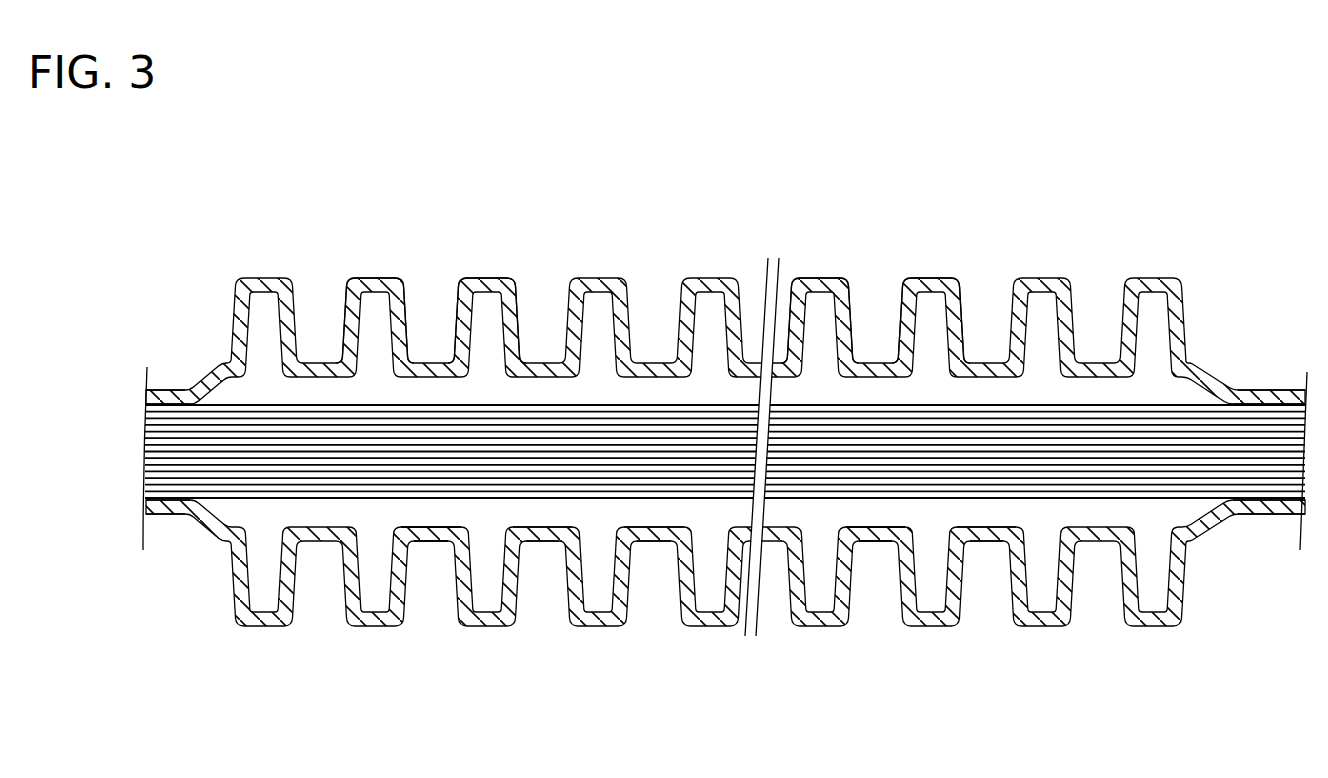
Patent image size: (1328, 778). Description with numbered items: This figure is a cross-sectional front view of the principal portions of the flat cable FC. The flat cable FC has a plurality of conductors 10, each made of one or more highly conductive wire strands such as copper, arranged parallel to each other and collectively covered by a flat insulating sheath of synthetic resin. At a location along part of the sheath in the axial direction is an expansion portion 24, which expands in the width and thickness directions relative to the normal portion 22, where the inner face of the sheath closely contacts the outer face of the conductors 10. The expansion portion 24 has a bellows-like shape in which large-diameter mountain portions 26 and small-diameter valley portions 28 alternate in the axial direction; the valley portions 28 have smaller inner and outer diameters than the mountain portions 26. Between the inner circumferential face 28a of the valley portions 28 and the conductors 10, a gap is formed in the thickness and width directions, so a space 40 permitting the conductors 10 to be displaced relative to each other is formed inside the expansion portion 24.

The flat cable FC is at (1150, 212).
The conductors 10 is at (1266, 476).
The normal portion 22 is at (176, 389).
The expansion portion 24 is at (551, 253).
The mountain portions 26 is at (387, 278).
The valley portions 28 is at (542, 542).
The inner circumferential face 28a is at (425, 527).
The space 40 is at (633, 510).